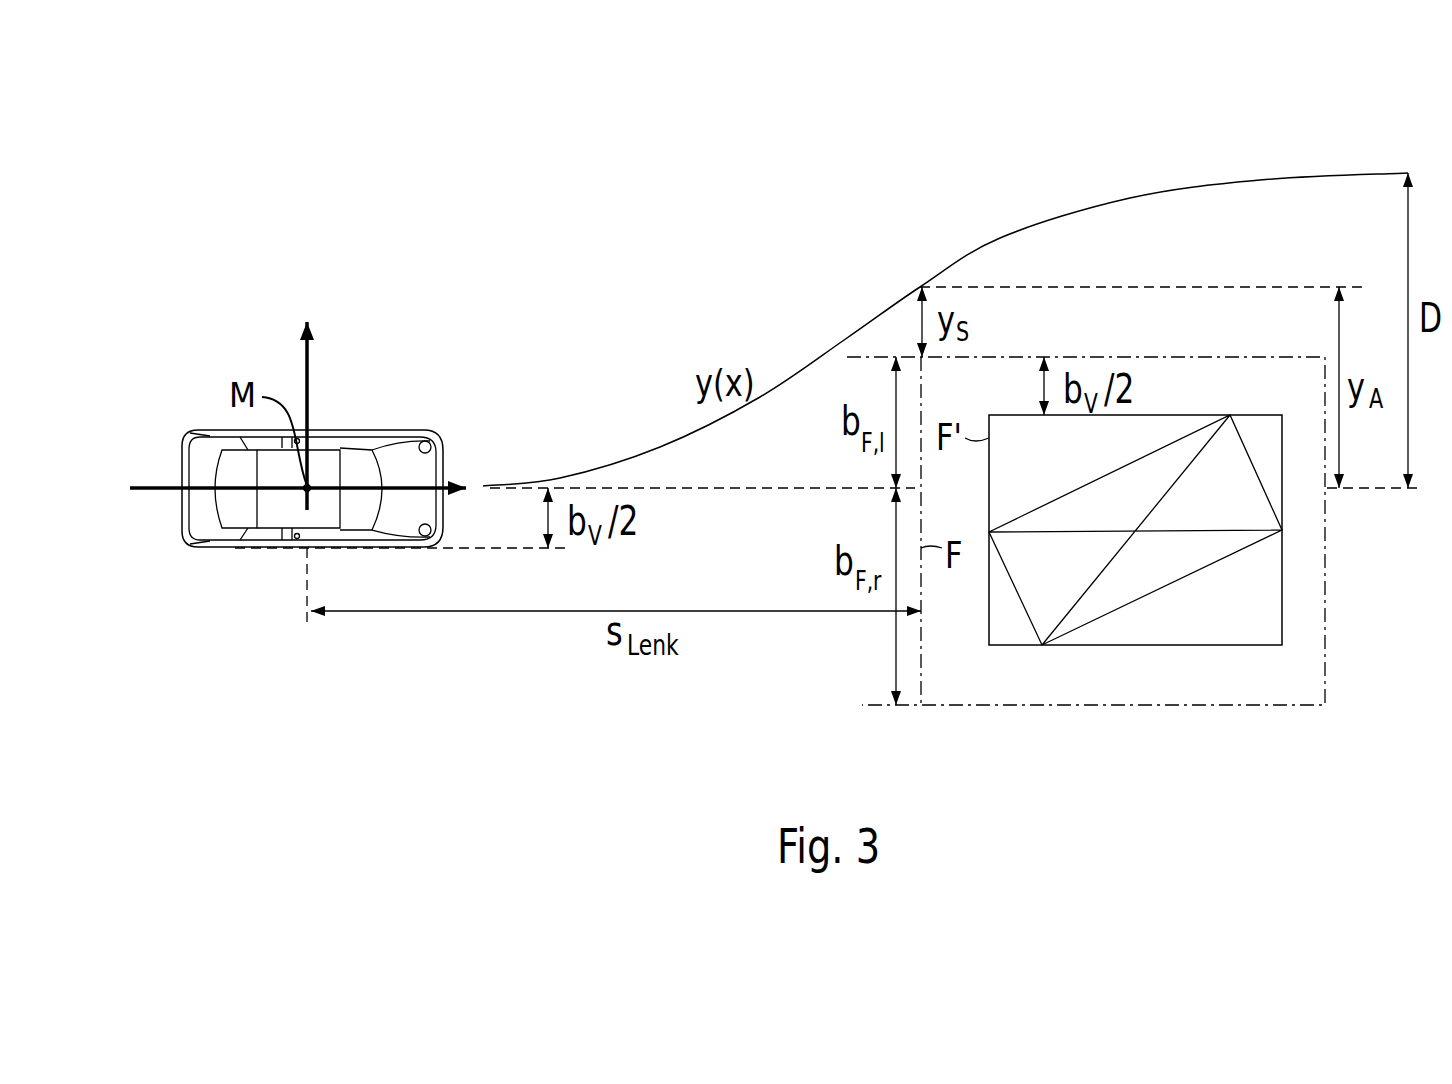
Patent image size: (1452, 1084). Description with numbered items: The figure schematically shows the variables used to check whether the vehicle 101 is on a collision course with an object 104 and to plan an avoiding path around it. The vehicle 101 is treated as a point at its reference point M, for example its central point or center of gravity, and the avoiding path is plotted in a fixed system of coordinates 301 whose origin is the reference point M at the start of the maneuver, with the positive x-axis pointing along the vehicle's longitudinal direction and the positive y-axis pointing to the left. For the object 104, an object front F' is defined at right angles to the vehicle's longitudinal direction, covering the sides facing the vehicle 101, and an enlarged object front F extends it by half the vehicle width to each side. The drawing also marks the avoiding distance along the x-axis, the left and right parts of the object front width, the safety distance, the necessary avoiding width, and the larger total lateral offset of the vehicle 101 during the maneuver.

The vehicle 101 is at (233, 503).
The system of coordinates 301 is at (308, 362).
The object 104 is at (1047, 588).